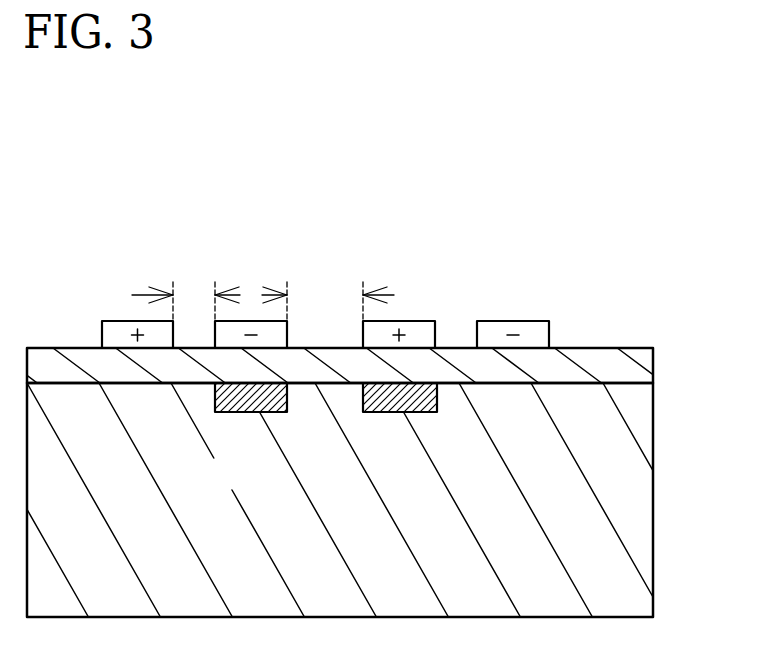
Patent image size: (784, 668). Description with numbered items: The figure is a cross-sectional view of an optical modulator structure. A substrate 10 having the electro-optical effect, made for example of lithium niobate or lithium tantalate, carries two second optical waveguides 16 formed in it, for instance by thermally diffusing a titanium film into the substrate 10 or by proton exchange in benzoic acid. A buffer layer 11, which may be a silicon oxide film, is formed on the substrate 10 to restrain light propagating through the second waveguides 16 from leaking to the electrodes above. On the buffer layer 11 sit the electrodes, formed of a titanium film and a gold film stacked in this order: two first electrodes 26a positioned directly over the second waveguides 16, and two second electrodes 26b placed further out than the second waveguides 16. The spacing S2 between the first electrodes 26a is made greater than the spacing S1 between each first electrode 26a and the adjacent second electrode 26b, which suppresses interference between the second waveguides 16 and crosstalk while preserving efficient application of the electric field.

The substrate 10 is at (653, 431).
The buffer layer 11 is at (653, 366).
The second optical waveguides 16 is at (227, 413).
The first electrodes 26a is at (420, 321).
The second electrodes 26b is at (115, 321).
The spacing S1 is at (186, 292).
The spacing S2 is at (328, 292).